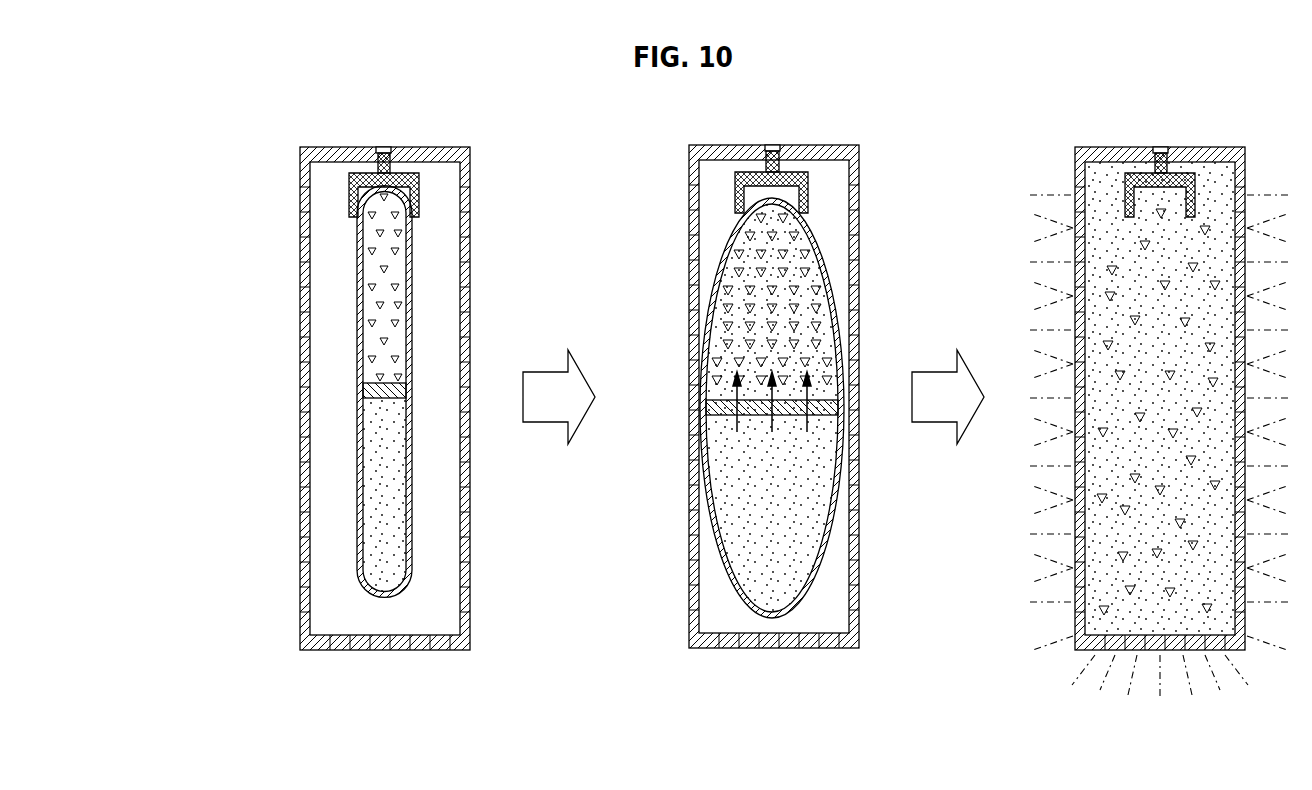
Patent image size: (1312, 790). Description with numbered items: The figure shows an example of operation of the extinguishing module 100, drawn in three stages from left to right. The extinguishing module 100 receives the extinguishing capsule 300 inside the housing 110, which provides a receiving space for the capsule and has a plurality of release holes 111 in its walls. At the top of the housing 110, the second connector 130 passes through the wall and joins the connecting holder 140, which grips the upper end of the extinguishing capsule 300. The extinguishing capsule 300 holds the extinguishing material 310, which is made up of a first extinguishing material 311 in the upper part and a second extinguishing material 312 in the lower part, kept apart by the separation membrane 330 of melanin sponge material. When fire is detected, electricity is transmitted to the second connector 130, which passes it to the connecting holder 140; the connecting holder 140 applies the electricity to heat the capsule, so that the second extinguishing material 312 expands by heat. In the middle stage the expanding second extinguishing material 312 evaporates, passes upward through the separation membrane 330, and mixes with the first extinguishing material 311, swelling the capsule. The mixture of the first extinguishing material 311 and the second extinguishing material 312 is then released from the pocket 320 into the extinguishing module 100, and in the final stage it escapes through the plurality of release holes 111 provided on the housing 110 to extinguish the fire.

The extinguishing module 100 is at (549, 98).
The housing 110 is at (470, 153).
The release holes 111 is at (470, 290).
The second connector 130 is at (383, 147).
The connecting holder 140 is at (420, 178).
The extinguishing capsule 300 is at (150, 215).
The extinguishing material 310 is at (216, 215).
The first extinguishing material 311 is at (358, 247).
The second extinguishing material 312 is at (360, 400).
The pocket 320 is at (358, 510).
The separation membrane 330 is at (383, 402).